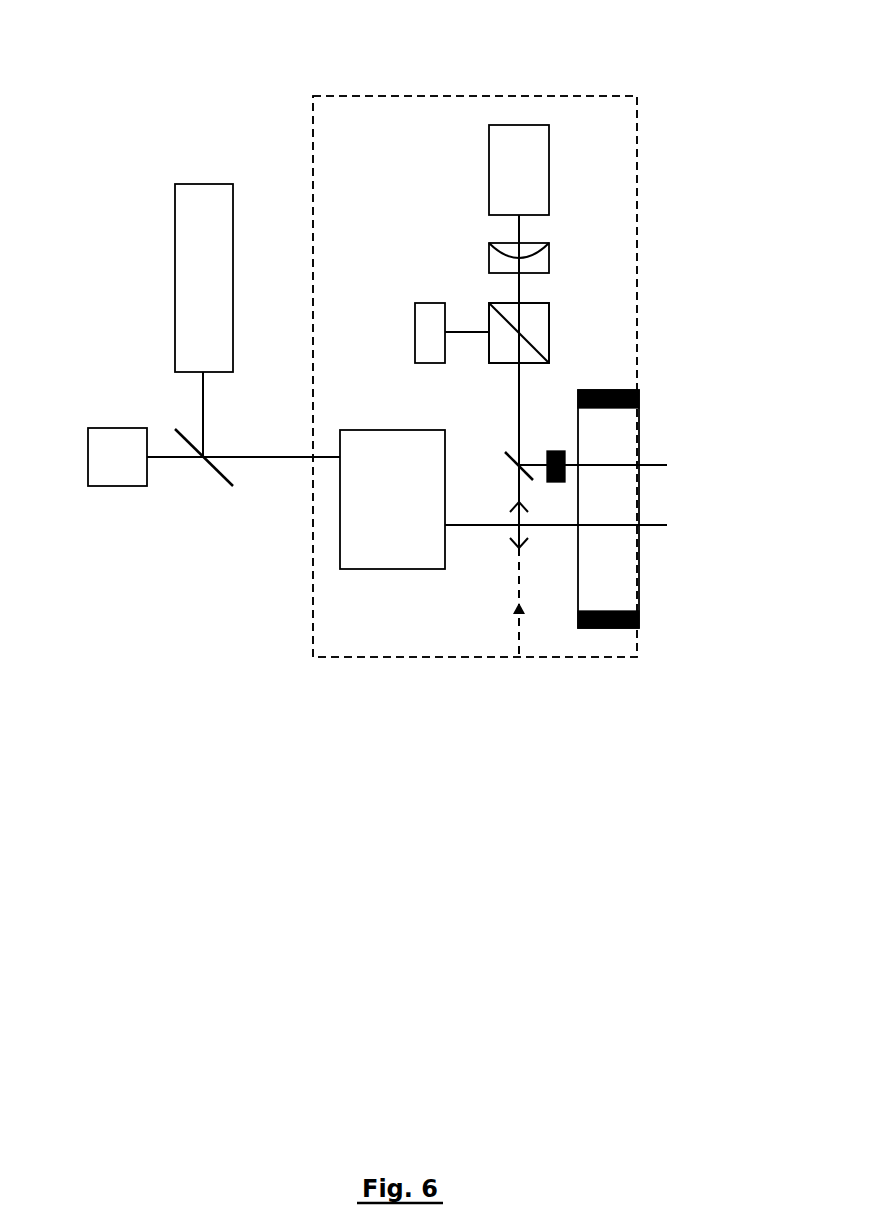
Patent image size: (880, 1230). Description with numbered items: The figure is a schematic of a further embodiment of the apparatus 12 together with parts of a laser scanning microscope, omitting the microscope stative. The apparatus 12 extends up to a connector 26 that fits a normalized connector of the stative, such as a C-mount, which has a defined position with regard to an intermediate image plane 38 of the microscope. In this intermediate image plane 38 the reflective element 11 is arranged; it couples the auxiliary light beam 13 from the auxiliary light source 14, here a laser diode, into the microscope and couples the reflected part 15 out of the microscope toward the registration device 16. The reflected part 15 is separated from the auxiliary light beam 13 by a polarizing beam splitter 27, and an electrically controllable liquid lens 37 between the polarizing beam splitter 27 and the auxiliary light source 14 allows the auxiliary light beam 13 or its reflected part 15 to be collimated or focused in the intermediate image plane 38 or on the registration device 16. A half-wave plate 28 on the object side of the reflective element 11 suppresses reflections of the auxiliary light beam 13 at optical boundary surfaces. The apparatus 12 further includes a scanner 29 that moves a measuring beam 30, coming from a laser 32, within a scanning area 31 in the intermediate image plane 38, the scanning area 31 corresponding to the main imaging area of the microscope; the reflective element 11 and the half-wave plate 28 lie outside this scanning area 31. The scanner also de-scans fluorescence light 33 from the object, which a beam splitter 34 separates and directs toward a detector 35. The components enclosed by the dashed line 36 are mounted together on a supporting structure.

The reflective element 11 is at (528, 451).
The apparatus 12 is at (431, 660).
The auxiliary light beam 13 is at (523, 288).
The auxiliary light source 14 is at (550, 146).
The reflected part 15 is at (467, 332).
The registration device 16 is at (425, 325).
The connector 26 is at (644, 392).
The polarizing beam splitter 27 is at (553, 325).
The λ/2-plate 28 is at (565, 453).
The scanner 29 is at (338, 561).
The measuring beam 30 is at (203, 400).
The scanning area 31 is at (512, 533).
The laser 32 is at (174, 252).
The fluorescence light 33 is at (161, 460).
The beam splitter 34 is at (210, 468).
The detector 35 is at (103, 487).
The dashed line 36 is at (361, 657).
The electrically controllable liquid lens 37 is at (553, 241).
The intermediate image plane 38 is at (519, 616).